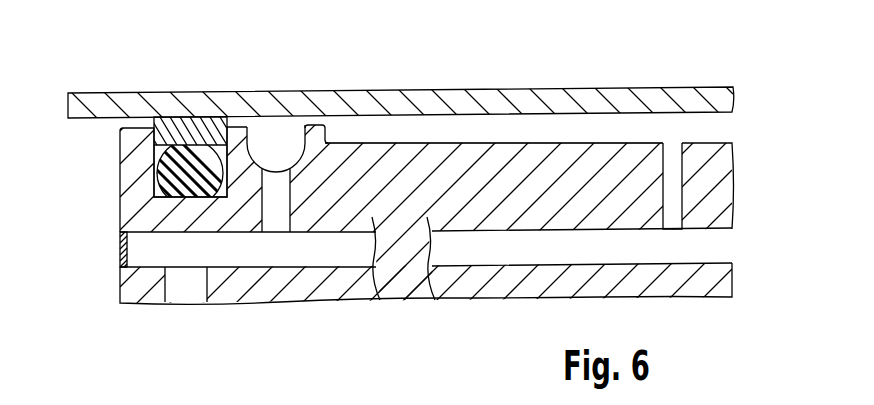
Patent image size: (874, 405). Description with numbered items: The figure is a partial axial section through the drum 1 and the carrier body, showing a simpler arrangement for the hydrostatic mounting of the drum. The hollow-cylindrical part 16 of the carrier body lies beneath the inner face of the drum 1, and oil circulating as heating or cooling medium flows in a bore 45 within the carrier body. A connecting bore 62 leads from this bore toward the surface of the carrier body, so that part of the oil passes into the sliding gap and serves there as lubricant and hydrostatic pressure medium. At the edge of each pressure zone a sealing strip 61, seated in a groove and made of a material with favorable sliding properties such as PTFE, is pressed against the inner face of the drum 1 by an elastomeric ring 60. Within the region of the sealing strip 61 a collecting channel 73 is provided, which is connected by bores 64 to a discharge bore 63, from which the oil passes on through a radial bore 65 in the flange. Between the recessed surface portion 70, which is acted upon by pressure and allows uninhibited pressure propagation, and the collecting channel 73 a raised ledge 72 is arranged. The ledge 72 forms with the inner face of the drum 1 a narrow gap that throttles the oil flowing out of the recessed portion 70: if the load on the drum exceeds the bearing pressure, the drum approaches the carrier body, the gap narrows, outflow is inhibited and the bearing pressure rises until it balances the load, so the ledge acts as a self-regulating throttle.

The drum 1 is at (103, 107).
The hollow-cylindrical part 16 is at (457, 167).
The bore 45 is at (457, 257).
The elastomeric ring 60 is at (175, 155).
The sealing strip 61 is at (200, 140).
The connecting bore 62 is at (668, 162).
The discharge bore 63 is at (258, 258).
The bore 64 is at (282, 202).
The radial bore 65 is at (185, 290).
The recessed surface portion 70 is at (383, 135).
The ledge 72 is at (318, 137).
The collecting channel 73 is at (272, 143).